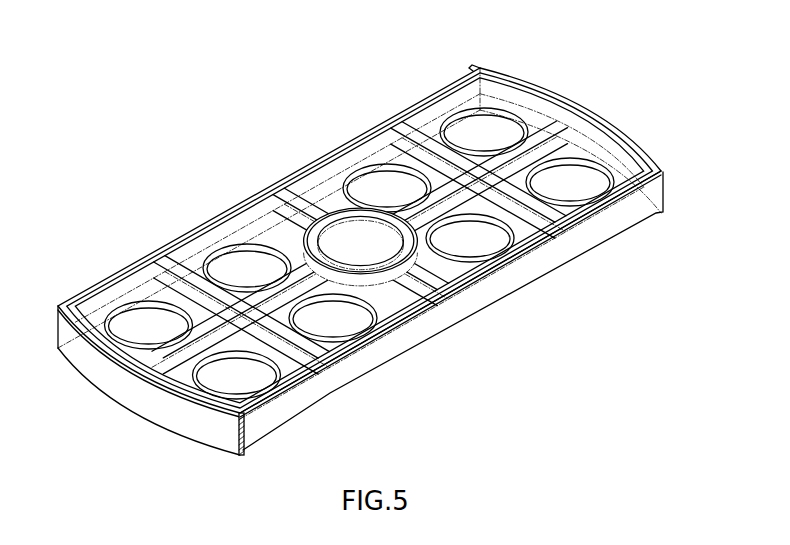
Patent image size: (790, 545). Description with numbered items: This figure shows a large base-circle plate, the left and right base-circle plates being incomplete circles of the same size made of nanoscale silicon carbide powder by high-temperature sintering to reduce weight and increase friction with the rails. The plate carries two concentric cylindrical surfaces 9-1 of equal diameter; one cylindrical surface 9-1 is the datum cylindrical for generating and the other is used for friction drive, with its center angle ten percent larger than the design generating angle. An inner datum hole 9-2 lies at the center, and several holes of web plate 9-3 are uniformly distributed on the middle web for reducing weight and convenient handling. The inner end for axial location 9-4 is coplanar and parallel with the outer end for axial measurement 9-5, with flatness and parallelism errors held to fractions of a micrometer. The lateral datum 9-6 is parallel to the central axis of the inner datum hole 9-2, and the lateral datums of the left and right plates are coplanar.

The cylindrical surface 9-1 is at (222, 425).
The inner datum hole 9-2 is at (357, 232).
The hole of web plate 9-3 is at (376, 187).
The inner end for axial location 9-4 is at (410, 245).
The outer end for axial measurement 9-5 is at (557, 93).
The lateral datum 9-6 is at (603, 223).